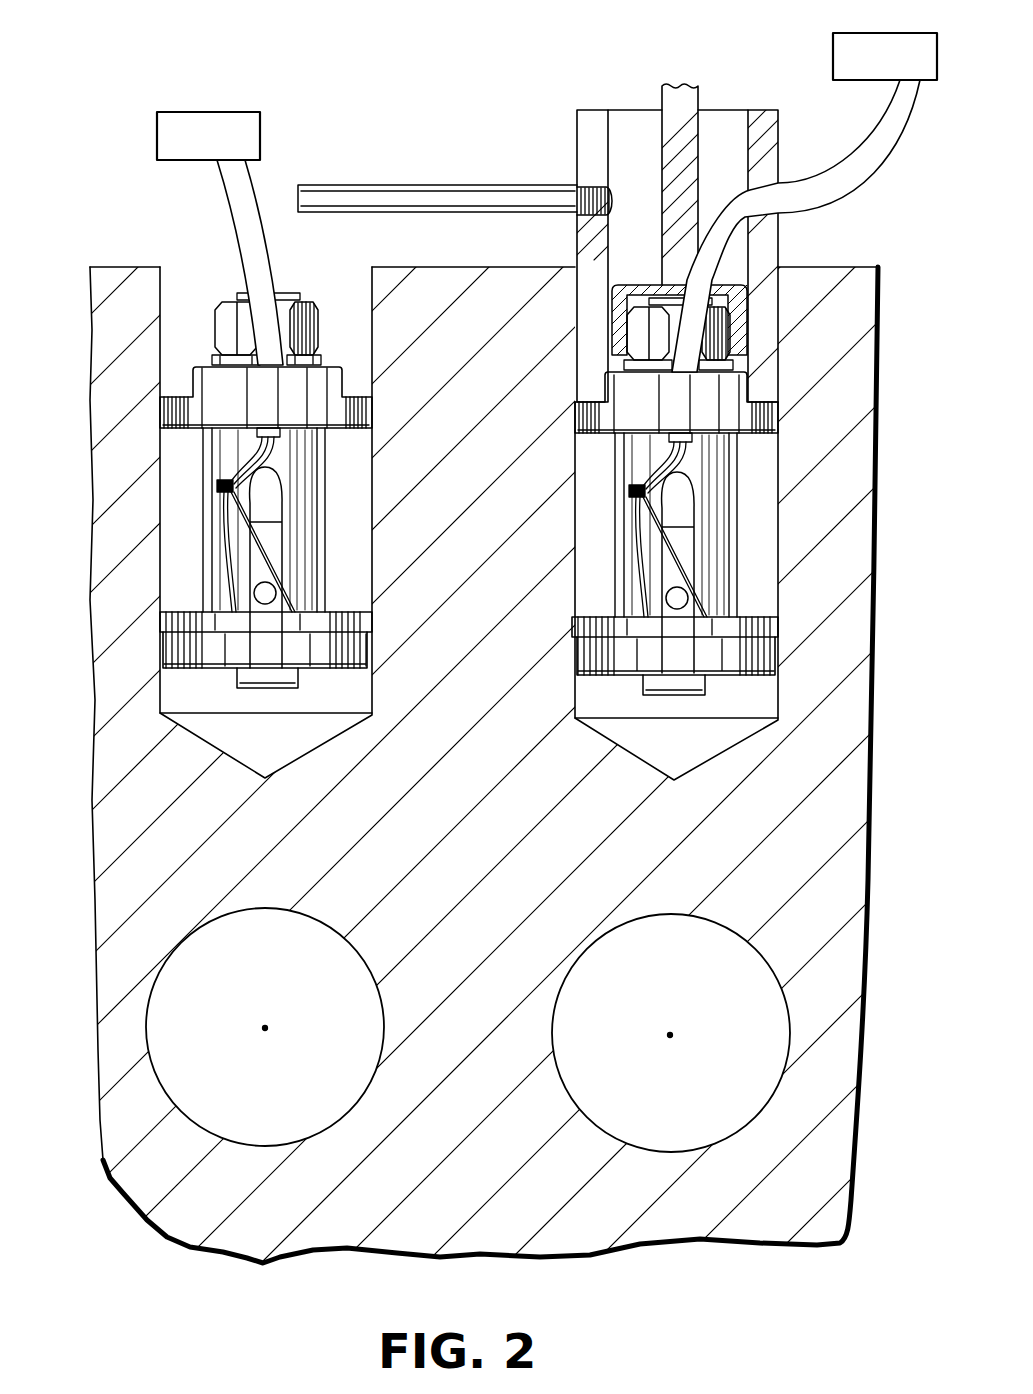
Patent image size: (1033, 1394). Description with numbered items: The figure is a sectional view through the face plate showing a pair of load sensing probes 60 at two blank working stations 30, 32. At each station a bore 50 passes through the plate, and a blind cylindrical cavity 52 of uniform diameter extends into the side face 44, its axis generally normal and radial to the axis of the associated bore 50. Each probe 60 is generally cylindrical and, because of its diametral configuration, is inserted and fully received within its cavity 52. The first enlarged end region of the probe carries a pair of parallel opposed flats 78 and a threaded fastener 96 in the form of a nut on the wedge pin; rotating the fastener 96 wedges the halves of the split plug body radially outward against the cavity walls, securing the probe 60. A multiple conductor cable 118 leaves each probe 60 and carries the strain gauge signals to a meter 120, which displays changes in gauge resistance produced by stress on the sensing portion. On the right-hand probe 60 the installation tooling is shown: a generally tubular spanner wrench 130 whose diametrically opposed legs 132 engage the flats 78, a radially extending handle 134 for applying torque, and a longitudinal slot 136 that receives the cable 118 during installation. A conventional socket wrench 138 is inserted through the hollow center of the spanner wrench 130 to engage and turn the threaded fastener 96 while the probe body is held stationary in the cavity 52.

The blank working station 30 is at (265, 1028).
The blank working station 32 is at (670, 1035).
The side face 44 is at (130, 263).
The bore 50 is at (357, 957).
The blind cylindrical cavity 52 is at (366, 337).
The load sensing probe 60 is at (501, 398).
The flats 78 is at (750, 386).
The threaded fastener 96 is at (715, 337).
The multiple conductor cable 118 is at (247, 195).
The meter 120 is at (158, 152).
The spanner wrench 130 is at (665, 345).
The legs 132 is at (596, 353).
The handle 134 is at (425, 183).
The longitudinal slot 136 is at (757, 257).
The socket wrench 138 is at (683, 113).